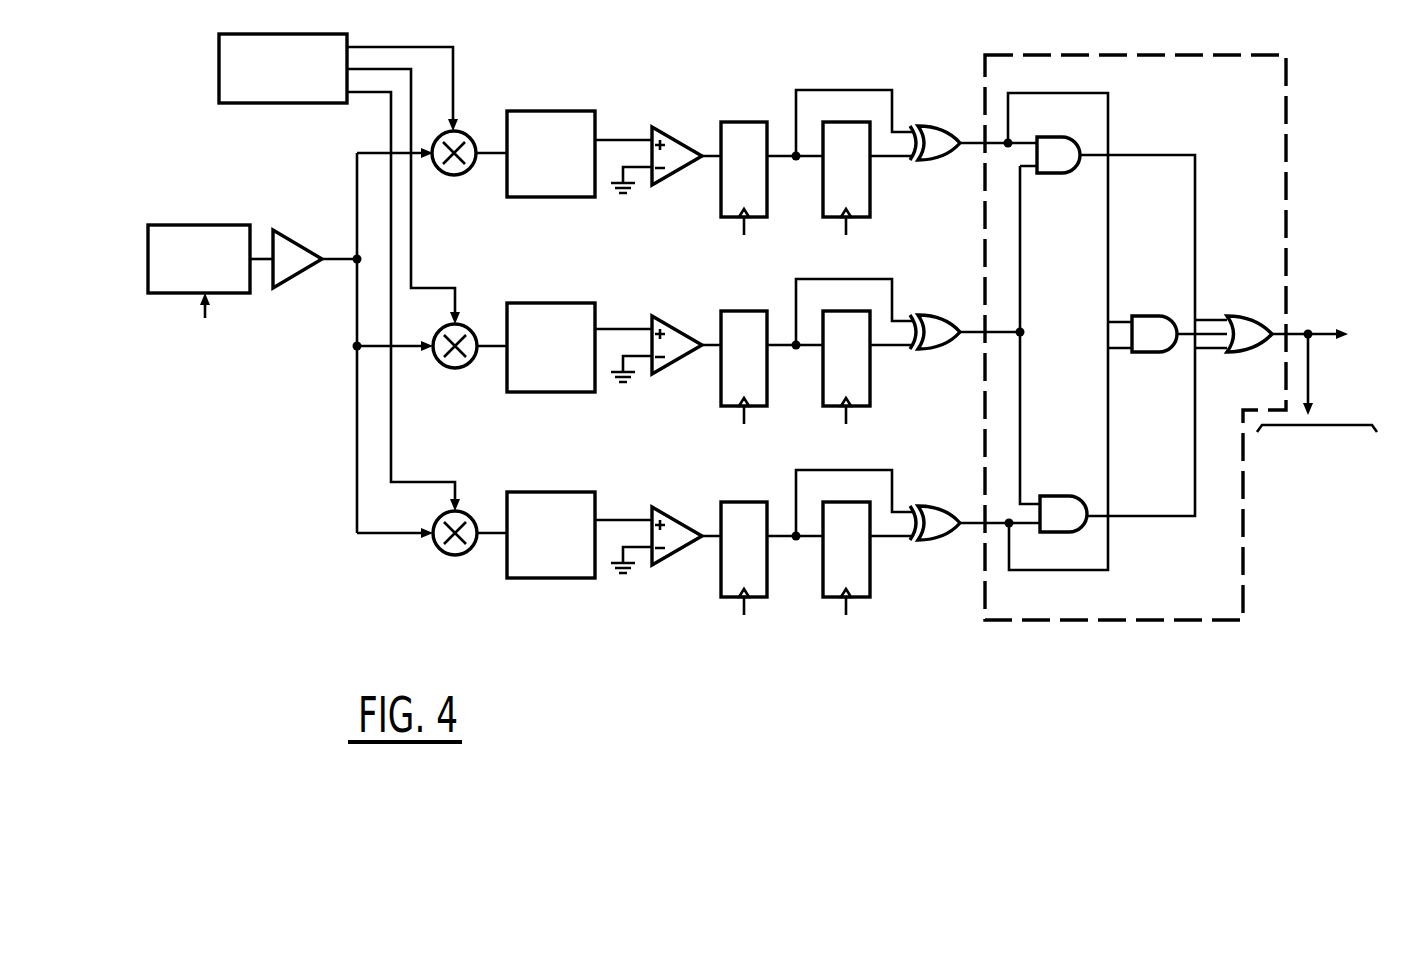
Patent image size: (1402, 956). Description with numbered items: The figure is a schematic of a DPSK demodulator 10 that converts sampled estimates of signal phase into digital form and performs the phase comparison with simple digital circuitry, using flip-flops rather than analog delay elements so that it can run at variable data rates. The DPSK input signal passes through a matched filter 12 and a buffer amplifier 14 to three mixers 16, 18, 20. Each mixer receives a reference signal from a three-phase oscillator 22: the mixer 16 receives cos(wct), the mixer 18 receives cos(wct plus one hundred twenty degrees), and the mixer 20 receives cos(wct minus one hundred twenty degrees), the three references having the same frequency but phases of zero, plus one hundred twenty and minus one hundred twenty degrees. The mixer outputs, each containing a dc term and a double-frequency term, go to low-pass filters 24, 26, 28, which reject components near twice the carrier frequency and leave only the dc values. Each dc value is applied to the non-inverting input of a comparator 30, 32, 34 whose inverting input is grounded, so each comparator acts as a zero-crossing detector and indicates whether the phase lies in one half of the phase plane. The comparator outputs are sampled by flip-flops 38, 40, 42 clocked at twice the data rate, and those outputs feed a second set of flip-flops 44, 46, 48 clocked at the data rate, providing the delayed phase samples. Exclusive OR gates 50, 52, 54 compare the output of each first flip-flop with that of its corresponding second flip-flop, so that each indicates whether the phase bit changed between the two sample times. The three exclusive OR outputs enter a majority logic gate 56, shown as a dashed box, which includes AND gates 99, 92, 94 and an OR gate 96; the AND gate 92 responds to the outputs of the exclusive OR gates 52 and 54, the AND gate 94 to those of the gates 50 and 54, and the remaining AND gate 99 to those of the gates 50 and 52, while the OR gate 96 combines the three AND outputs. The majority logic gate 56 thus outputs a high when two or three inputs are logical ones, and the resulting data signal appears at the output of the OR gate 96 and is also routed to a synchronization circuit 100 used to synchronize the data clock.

The DPSK demodulator 10 is at (890, 52).
The matched filter 12 is at (185, 225).
The buffer amplifier 14 is at (291, 231).
The mixer 16 is at (455, 176).
The mixer 18 is at (455, 369).
The mixer 20 is at (455, 556).
The three-phase oscillator 22 is at (297, 104).
The low-pass filter 24 is at (587, 111).
The low-pass filter 26 is at (568, 303).
The low-pass filter 28 is at (548, 492).
The comparator 30 is at (672, 127).
The comparator 32 is at (665, 317).
The comparator 34 is at (667, 507).
The flip-flop 38 is at (733, 122).
The flip-flop 40 is at (722, 385).
The flip-flop 42 is at (720, 590).
The flip-flop 44 is at (872, 182).
The flip-flop 46 is at (870, 370).
The flip-flop 48 is at (871, 570).
The exclusive OR gate 50 is at (952, 126).
The exclusive OR gate 52 is at (955, 315).
The exclusive OR gate 54 is at (930, 506).
The majority logic gate 56 is at (1135, 372).
The AND gate 92 is at (1050, 496).
The AND gate 94 is at (1150, 316).
The OR gate 96 is at (1237, 317).
The AND gate 99 is at (1055, 173).
The synchronization circuit 100 is at (1317, 414).